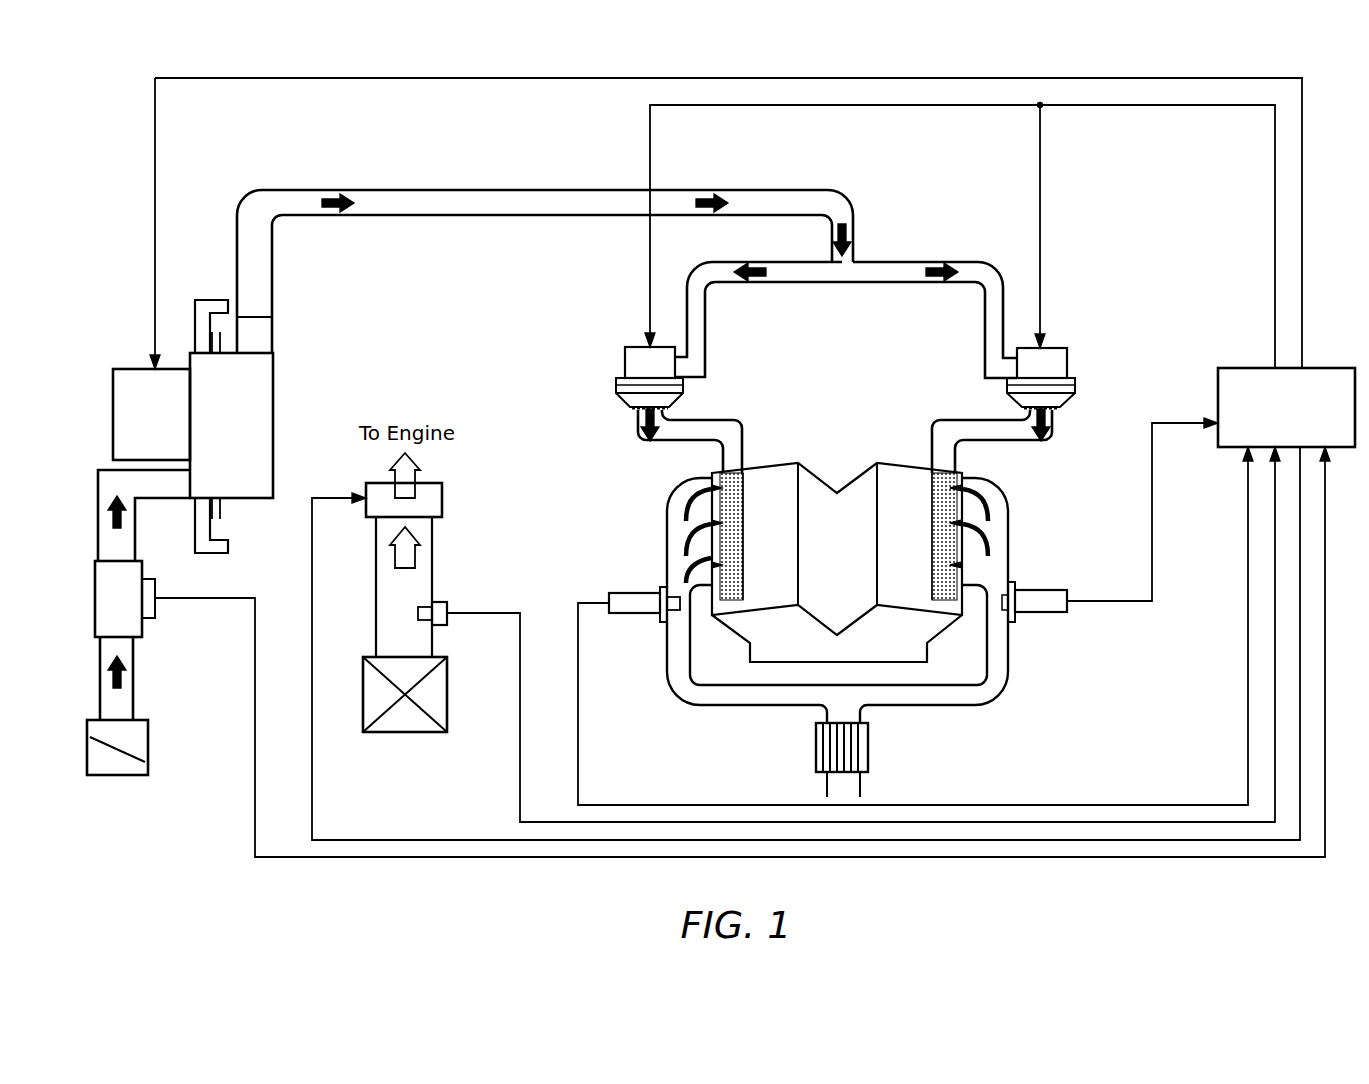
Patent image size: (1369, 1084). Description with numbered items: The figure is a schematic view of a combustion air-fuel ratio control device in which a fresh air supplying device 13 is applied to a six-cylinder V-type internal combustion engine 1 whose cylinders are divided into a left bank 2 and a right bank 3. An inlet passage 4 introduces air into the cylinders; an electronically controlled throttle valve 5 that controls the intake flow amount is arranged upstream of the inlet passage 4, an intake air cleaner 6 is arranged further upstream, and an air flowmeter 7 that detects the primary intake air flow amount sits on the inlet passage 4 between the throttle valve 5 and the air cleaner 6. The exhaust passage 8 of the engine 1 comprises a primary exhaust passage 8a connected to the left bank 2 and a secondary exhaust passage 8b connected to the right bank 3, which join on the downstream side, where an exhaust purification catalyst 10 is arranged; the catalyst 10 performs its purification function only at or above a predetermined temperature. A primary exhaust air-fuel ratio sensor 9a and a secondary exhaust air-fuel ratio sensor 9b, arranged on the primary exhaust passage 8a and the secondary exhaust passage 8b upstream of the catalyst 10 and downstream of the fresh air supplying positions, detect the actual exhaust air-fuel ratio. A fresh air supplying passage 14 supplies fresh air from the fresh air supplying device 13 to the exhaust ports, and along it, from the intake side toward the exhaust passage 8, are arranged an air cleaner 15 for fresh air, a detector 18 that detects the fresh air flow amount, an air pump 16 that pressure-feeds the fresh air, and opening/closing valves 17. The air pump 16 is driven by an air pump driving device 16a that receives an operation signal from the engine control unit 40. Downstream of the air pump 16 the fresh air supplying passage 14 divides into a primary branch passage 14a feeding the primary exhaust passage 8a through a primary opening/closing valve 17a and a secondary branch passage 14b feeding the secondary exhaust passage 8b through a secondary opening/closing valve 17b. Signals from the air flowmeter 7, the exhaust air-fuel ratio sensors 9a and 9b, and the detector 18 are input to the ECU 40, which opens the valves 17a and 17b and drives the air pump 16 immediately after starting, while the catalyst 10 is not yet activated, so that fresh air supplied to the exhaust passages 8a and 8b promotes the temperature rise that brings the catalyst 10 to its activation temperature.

The internal combustion engine 1 is at (843, 462).
The left bank 2 is at (771, 481).
The right bank 3 is at (898, 480).
The inlet passage 4 is at (432, 556).
The electronically controlled throttle valve 5 is at (445, 497).
The intake air cleaner 6 is at (393, 733).
The air flowmeter 7 is at (447, 605).
The exhaust passage 8 is at (660, 506).
The primary exhaust passage 8a is at (667, 530).
The secondary exhaust passage 8b is at (1008, 527).
The primary exhaust air-fuel ratio sensor 9a is at (640, 592).
The secondary exhaust air-fuel ratio sensor 9b is at (1032, 590).
The exhaust purification catalyst 10 is at (816, 745).
The fresh air supplying device 13 is at (853, 173).
The fresh air supplying passage 14 is at (682, 190).
The primary branch passage 14a is at (720, 288).
The secondary branch passage 14b is at (983, 285).
The air cleaner 15 is at (120, 778).
The air pump 16 is at (250, 435).
The air pump driving device 16a is at (125, 425).
The opening/closing valves 17 is at (625, 366).
The primary opening/closing valve 17a is at (617, 395).
The secondary opening/closing valve 17b is at (1075, 380).
The detector 18 is at (95, 598).
The engine control unit 40 is at (1218, 395).